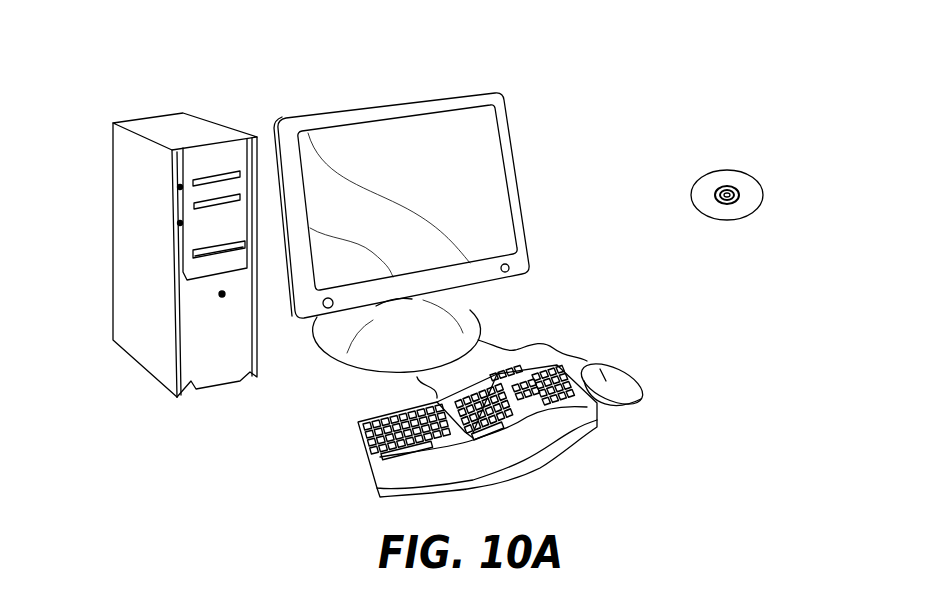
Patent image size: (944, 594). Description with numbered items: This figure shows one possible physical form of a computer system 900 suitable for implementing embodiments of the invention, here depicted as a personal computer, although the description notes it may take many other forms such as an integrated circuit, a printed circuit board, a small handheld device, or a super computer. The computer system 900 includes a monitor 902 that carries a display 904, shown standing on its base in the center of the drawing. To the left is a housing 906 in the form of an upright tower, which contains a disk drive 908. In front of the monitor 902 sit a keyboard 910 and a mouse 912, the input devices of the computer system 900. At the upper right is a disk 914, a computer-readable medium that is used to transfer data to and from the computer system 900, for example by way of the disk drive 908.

The computer system 900 is at (650, 74).
The monitor 902 is at (523, 205).
The display 904 is at (473, 137).
The housing 906 is at (170, 127).
The disk drive 908 is at (232, 246).
The keyboard 910 is at (368, 464).
The mouse 912 is at (625, 375).
The disk 914 is at (745, 172).